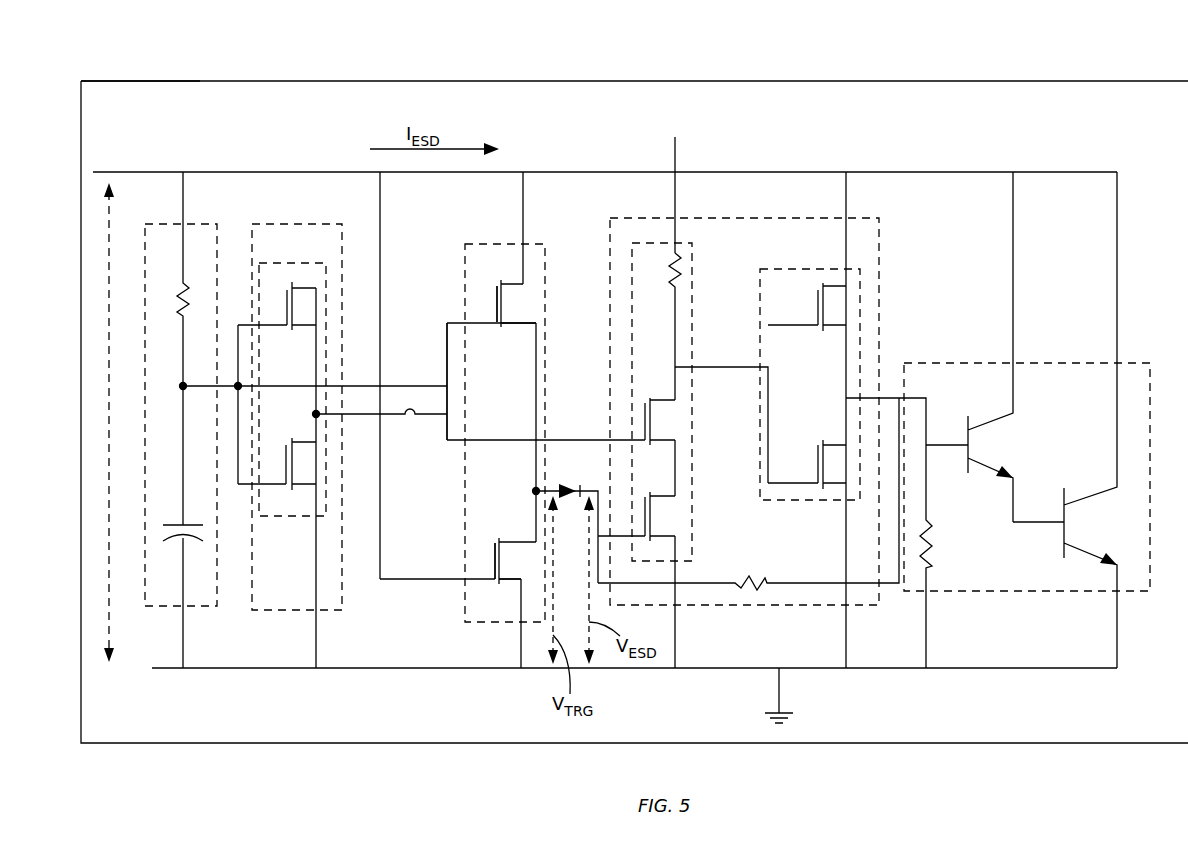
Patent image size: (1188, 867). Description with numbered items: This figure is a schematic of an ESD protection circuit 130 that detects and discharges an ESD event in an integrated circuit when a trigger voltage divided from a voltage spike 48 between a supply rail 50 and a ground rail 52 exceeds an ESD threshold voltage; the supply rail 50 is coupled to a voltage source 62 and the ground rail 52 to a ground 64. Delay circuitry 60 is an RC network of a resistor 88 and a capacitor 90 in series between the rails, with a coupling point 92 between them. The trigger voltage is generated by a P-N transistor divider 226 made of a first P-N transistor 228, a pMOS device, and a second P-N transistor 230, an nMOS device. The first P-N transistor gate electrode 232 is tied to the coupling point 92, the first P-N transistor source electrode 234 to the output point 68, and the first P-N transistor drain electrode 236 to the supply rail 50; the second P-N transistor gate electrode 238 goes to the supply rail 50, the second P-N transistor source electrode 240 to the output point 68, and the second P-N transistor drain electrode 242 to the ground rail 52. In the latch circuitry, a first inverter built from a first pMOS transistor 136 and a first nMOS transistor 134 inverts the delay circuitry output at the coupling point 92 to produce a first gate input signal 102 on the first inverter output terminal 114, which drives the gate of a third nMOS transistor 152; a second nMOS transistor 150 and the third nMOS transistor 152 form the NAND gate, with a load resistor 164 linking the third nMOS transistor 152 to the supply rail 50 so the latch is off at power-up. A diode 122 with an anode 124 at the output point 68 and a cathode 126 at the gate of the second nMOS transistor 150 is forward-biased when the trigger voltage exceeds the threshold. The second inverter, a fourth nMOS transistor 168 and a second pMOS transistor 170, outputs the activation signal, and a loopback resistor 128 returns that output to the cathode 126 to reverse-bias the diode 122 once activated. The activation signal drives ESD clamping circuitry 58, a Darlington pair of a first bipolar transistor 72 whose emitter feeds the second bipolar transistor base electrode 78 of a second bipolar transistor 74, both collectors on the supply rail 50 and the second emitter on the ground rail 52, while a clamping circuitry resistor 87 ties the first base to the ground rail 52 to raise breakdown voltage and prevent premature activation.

The ESD protection circuit 130 is at (1046, 80).
The supply rail 50 is at (152, 172).
The ground rail 52 is at (167, 669).
The voltage spike 48 is at (117, 232).
The delay circuitry 60 is at (190, 224).
The resistor 88 is at (181, 290).
The coupling point 92 is at (181, 385).
The capacitor 90 is at (170, 524).
The first pMOS transistor 136 is at (298, 306).
The first nMOS transistor 134 is at (298, 462).
The first inverter output terminal 114 is at (394, 419).
The first gate input signal 102 is at (411, 420).
The P-N transistor divider 226 is at (531, 244).
The first P-N transistor drain electrode 236 is at (513, 284).
The first P-N transistor 228 is at (505, 305).
The first P-N transistor gate electrode 232 is at (455, 321).
The first P-N transistor source electrode 234 is at (510, 325).
The second P-N transistor source electrode 240 is at (520, 540).
The second P-N transistor gate electrode 238 is at (441, 578).
The second P-N transistor drain electrode 242 is at (510, 582).
The second P-N transistor 230 is at (507, 561).
The output point 68 is at (534, 490).
The anode 124 is at (558, 485).
The cathode 126 is at (585, 484).
The diode 122 is at (570, 498).
The voltage source 62 is at (706, 124).
The load resistor 164 is at (684, 276).
The third nMOS transistor 152 is at (659, 422).
The second nMOS transistor 150 is at (659, 516).
The loopback resistor 128 is at (749, 581).
The second pMOS transistor 170 is at (828, 306).
The fourth nMOS transistor 168 is at (828, 465).
The ESD clamping circuitry 58 is at (1130, 362).
The clamping circuitry resistor 87 is at (936, 546).
The first bipolar transistor 72 is at (976, 448).
The second bipolar transistor base electrode 78 is at (1033, 524).
The second bipolar transistor 74 is at (1070, 528).
The ground 64 is at (798, 716).